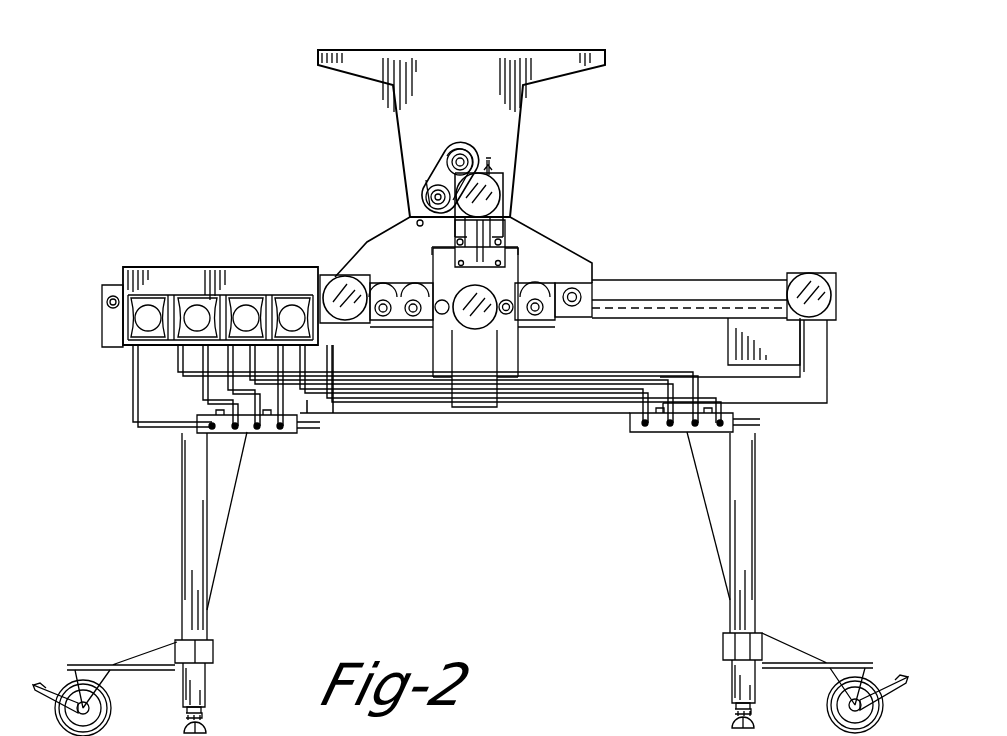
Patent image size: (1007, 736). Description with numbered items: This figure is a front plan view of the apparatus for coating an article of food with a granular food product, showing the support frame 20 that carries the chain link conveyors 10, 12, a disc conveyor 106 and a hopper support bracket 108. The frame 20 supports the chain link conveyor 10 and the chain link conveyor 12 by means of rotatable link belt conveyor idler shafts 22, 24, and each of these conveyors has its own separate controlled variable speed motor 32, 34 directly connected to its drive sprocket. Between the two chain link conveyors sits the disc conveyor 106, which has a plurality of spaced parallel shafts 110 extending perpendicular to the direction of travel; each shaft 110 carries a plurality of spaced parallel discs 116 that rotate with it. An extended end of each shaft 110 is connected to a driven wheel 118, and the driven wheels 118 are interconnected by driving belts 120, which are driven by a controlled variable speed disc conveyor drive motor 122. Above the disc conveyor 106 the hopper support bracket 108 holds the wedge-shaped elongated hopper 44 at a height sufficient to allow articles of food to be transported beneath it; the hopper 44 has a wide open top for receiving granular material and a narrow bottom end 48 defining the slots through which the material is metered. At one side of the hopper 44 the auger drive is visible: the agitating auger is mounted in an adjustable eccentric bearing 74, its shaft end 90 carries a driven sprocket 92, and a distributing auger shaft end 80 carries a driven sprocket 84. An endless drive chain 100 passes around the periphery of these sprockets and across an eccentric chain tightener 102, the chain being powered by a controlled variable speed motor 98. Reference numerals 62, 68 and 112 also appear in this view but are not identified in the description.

The chain link conveyor 10 is at (256, 243).
The chain link conveyor 12 is at (682, 265).
The support frame 20 is at (192, 496).
The link belt conveyor idler shaft 22 is at (110, 310).
The link belt conveyor idler shaft 24 is at (576, 297).
The controlled variable speed motor 32 is at (343, 283).
The controlled variable speed motor 34 is at (806, 290).
The hopper 44 is at (550, 64).
The narrow bottom end 48 is at (422, 214).
The support plate 62 is at (420, 206).
The bracket 68 is at (490, 172).
The eccentric bearing 74 is at (470, 148).
The shaft end 80 is at (428, 190).
The driven sprocket 84 is at (432, 197).
The shaft end 90 is at (462, 153).
The driven sprocket 92 is at (452, 148).
The controlled variable speed motor 98 is at (493, 200).
The endless drive chain 100 is at (450, 172).
The eccentric chain tightener 102 is at (493, 167).
The disc conveyor 106 is at (582, 262).
The hopper support bracket 108 is at (367, 242).
The shaft 110 is at (414, 318).
The roller 112 is at (540, 303).
The disc 116 is at (415, 290).
The driven wheel 118 is at (415, 316).
The driving belt 120 is at (388, 420).
The disc conveyor drive motor 122 is at (473, 312).